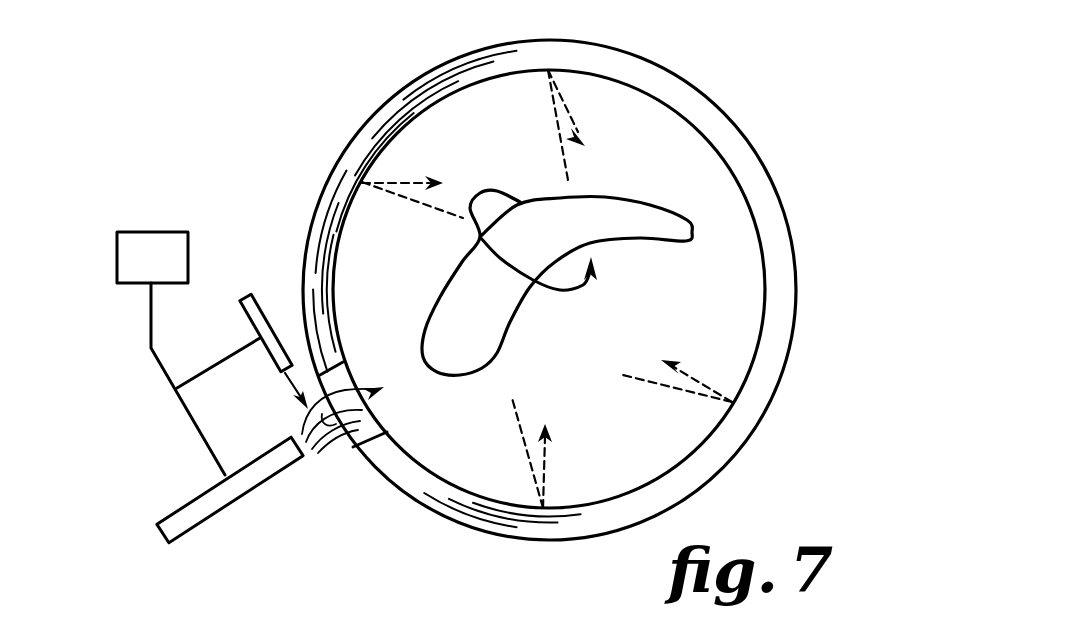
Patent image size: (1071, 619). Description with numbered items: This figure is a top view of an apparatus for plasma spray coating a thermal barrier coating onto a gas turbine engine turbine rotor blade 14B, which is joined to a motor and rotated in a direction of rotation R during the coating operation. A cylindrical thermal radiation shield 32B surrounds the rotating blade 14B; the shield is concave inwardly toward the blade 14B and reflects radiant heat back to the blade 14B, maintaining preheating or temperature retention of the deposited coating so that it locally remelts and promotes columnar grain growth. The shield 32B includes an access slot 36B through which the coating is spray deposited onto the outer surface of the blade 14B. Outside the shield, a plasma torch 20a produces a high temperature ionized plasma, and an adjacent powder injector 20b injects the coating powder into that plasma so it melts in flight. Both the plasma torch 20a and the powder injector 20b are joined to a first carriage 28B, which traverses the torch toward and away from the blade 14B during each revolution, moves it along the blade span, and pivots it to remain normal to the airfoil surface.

The turbine rotor blade 14B is at (643, 198).
The radiation shield 32B is at (782, 205).
The access slot 36B is at (363, 437).
The first carriage 28B is at (179, 271).
The plasma torch 20a is at (228, 510).
The powder injector 20b is at (240, 315).
The rotation R is at (567, 292).